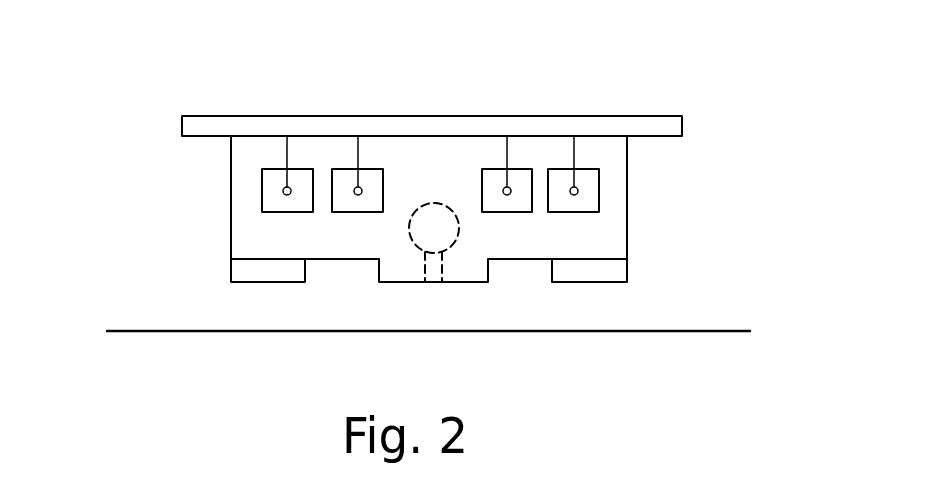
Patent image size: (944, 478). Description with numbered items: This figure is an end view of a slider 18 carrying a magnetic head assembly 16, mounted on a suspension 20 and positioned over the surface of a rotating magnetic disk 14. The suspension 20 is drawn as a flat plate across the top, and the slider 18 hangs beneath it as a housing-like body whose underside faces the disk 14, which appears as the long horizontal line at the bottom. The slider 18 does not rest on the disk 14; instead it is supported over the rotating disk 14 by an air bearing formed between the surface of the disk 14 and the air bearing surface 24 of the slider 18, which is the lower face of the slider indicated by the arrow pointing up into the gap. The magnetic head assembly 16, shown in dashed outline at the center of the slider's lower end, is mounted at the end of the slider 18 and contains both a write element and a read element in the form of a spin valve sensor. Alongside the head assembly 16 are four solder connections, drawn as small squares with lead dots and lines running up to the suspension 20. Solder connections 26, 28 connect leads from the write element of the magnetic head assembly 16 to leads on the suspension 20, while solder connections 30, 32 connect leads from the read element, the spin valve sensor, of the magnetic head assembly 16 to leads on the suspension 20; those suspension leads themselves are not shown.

The disk 14 is at (157, 331).
The magnetic head assembly 16 is at (442, 272).
The slider 18 is at (627, 194).
The suspension 20 is at (662, 116).
The air bearing surface 24 is at (297, 298).
The solder connection 26 is at (270, 168).
The solder connection 28 is at (352, 168).
The solder connection 30 is at (517, 168).
The solder connection 32 is at (590, 168).